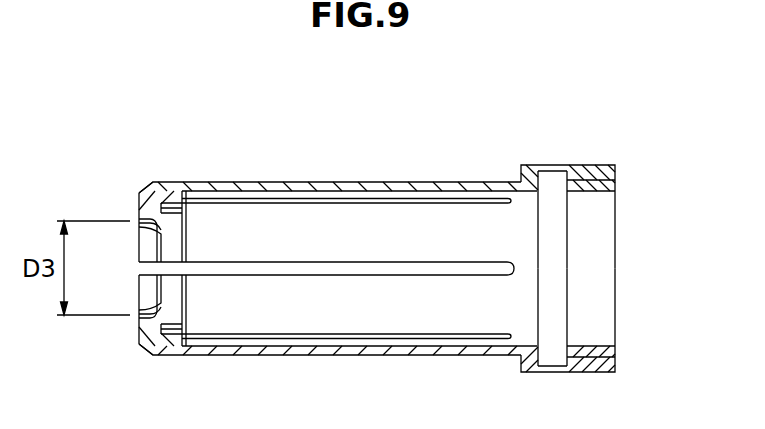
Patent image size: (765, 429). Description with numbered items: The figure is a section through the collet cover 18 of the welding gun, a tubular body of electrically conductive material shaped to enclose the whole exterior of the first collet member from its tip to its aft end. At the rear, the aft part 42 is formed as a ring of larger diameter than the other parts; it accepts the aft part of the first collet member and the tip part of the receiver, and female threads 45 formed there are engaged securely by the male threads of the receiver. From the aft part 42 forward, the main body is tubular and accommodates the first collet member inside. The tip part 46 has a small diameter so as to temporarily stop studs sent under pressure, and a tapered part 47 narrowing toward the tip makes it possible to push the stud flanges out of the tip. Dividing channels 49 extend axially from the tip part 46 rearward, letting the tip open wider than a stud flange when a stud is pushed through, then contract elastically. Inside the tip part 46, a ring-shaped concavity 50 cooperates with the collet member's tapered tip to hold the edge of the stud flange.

The collet cover 18 is at (450, 152).
The aft part 42 is at (555, 165).
The female threads 45 is at (612, 188).
The tip part 46 is at (150, 191).
The tapered part 47 is at (141, 230).
The dividing channels 49 is at (358, 263).
The ring-shaped concavity 50 is at (189, 213).